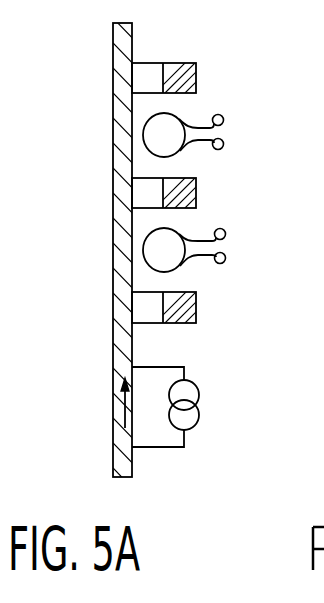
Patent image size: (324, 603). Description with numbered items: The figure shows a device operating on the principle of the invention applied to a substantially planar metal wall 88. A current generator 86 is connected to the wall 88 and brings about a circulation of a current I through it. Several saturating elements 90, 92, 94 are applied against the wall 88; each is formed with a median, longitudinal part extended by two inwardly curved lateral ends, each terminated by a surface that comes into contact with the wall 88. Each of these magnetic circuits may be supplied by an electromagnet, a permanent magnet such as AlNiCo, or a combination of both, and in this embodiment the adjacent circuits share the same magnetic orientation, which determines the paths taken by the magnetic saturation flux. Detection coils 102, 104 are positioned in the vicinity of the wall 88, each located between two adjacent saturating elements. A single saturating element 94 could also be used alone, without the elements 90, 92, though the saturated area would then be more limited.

The wall 88 is at (112, 55).
The saturating element 90 is at (178, 63).
The saturating element 92 is at (197, 190).
The saturating element 94 is at (197, 310).
The detection coil 102 is at (226, 247).
The detection coil 104 is at (227, 132).
The current generator 86 is at (199, 396).
The current I is at (123, 412).